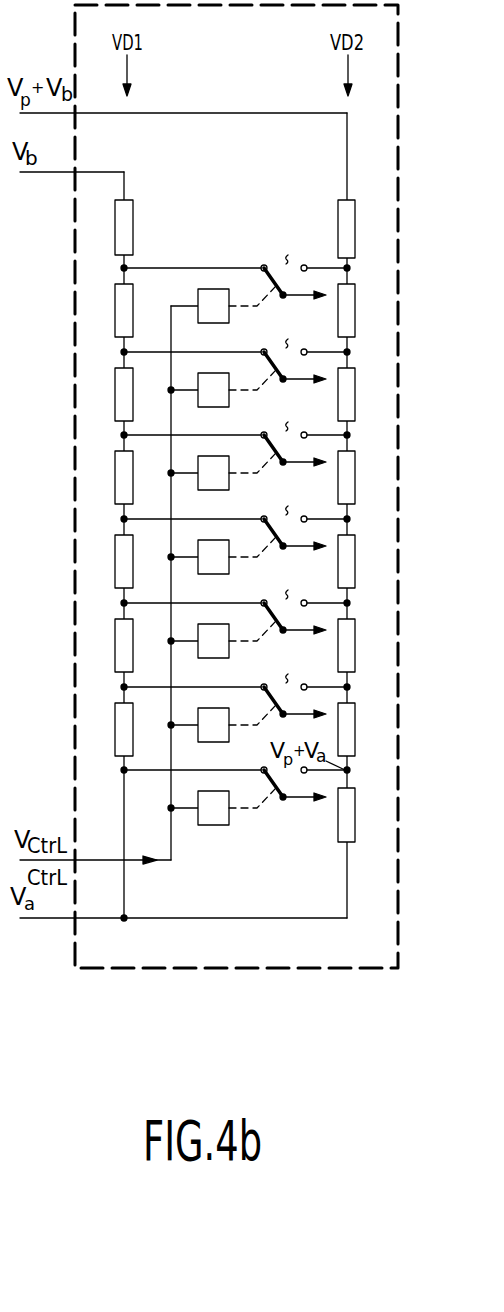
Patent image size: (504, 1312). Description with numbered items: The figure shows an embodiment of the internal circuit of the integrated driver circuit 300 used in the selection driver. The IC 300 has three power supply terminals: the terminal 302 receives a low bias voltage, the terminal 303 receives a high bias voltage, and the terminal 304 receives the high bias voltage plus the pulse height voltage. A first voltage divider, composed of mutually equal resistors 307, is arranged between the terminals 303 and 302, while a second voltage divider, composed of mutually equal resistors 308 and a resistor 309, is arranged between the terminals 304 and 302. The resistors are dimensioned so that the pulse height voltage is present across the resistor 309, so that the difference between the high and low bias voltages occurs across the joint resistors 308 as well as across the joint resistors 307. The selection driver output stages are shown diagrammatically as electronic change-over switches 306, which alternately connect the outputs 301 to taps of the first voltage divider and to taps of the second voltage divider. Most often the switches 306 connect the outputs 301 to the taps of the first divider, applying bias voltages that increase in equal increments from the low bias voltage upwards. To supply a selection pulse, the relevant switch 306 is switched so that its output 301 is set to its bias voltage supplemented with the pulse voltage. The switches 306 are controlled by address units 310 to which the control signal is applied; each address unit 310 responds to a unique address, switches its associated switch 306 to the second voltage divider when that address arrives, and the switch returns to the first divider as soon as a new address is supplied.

The integrated circuit 300 is at (74, 314).
The output 301 is at (298, 808).
The power supply terminal 302 is at (72, 918).
The power supply terminal 303 is at (73, 172).
The power supply terminal 304 is at (73, 113).
The change-over switch 306 is at (261, 786).
The resistor 307 is at (114, 218).
The resistor 308 is at (355, 226).
The resistor 309 is at (355, 825).
The address unit 310 is at (201, 292).